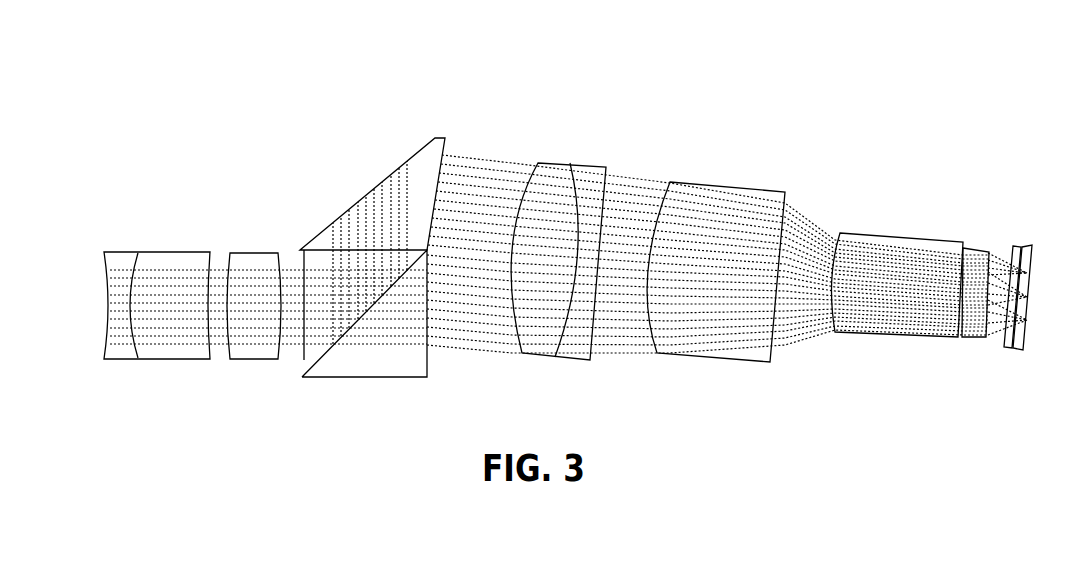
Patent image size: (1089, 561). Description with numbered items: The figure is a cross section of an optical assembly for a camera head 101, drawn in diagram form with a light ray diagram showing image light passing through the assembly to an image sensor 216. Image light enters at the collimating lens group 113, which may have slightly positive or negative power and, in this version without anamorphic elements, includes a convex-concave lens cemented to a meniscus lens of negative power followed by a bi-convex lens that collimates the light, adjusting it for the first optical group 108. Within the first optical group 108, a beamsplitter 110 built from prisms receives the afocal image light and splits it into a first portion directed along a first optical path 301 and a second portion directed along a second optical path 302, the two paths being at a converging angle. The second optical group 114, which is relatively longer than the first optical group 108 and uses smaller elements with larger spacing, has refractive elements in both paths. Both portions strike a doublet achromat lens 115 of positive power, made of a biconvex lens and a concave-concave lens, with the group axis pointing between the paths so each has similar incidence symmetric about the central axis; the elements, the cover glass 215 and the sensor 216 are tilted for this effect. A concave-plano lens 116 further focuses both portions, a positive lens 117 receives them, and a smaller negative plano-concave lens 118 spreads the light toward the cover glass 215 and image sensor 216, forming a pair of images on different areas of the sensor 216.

The camera head 101 is at (358, 89).
The first optical group 108 is at (430, 390).
The beamsplitter 110 is at (437, 137).
The collimating lens group 113 is at (285, 378).
The second optical group 114 is at (988, 376).
The doublet achromat lens 115 is at (567, 161).
The concave-plano lens 116 is at (735, 182).
The lens 117 is at (905, 233).
The plano-concave lens 118 is at (973, 248).
The cover glass 215 is at (1015, 247).
The image sensor 216 is at (1033, 262).
The first optical path 301 is at (447, 350).
The second optical path 302 is at (470, 154).